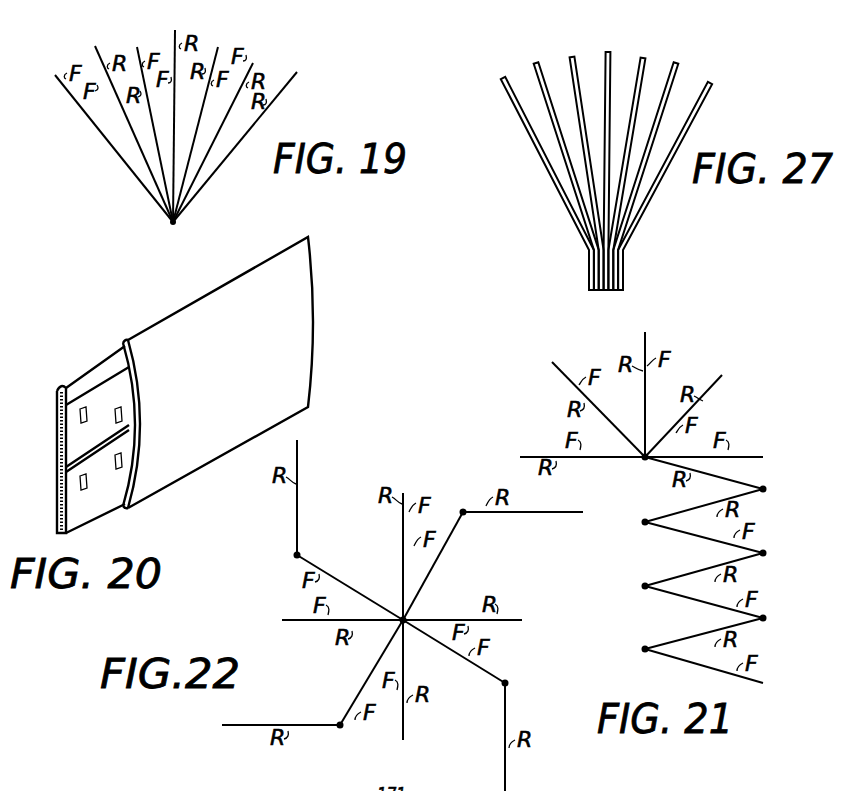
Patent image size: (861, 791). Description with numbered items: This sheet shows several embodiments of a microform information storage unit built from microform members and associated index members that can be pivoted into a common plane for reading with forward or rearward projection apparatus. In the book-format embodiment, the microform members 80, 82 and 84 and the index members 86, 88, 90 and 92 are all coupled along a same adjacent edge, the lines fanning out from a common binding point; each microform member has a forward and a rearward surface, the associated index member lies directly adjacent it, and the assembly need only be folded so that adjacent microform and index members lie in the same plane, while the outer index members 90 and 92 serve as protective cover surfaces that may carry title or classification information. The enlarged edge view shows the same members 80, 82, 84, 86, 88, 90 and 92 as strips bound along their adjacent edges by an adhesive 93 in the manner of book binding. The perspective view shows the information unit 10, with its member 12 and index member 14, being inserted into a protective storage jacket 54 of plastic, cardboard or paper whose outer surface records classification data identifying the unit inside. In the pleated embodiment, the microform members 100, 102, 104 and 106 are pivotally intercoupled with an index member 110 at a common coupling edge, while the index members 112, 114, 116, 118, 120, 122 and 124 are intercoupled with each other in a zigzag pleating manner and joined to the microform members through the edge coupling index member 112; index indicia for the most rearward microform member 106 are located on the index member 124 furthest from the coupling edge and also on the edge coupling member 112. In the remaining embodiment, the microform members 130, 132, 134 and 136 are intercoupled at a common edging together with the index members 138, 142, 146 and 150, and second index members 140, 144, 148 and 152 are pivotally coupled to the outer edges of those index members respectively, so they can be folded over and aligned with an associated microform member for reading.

In FIG. 20, the information unit 10 is at (104, 352).
In FIG. 20, the base plate 12 is at (88, 513).
In FIG. 20, the index member 14 is at (58, 497).
In FIG. 20, the storage jacket 54 is at (251, 258).
In FIG. 19, the microform member 80 is at (96, 64).
In FIG. 27, the microform member 80 is at (534, 70).
In FIG. 19, the microform member 82 is at (176, 47).
In FIG. 27, the microform member 82 is at (611, 53).
In FIG. 19, the microform member 84 is at (254, 75).
In FIG. 27, the microform member 84 is at (679, 78).
In FIG. 19, the index member 86 is at (138, 53).
In FIG. 27, the index member 86 is at (571, 62).
In FIG. 19, the index member 88 is at (218, 59).
In FIG. 27, the index member 88 is at (645, 65).
In FIG. 19, the index member 90 is at (293, 87).
In FIG. 27, the index member 90 is at (712, 91).
In FIG. 19, the index member 92 is at (52, 70).
In FIG. 27, the index member 92 is at (500, 80).
In FIG. 27, the adhesive 93 is at (589, 274).
In FIG. 21, the microform member 100 is at (717, 381).
In FIG. 21, the microform member 102 is at (647, 341).
In FIG. 21, the microform member 104 is at (558, 362).
In FIG. 21, the microform member 106 is at (544, 455).
In FIG. 21, the index member 110 is at (761, 455).
In FIG. 21, the index member 112 is at (761, 486).
In FIG. 21, the index member 114 is at (763, 494).
In FIG. 21, the index member 116 is at (761, 551).
In FIG. 21, the index member 118 is at (763, 556).
In FIG. 21, the index member 120 is at (761, 616).
In FIG. 21, the index member 122 is at (763, 622).
In FIG. 21, the index member 124 is at (763, 681).
In FIG. 22, the microform member 130 is at (408, 490).
In FIG. 22, the microform member 132 is at (509, 622).
In FIG. 22, the microform member 134 is at (405, 726).
In FIG. 22, the microform member 136 is at (302, 622).
In FIG. 22, the index member 138 is at (439, 573).
In FIG. 22, the index member 140 is at (559, 512).
In FIG. 22, the index member 142 is at (496, 673).
In FIG. 22, the index member 144 is at (505, 760).
In FIG. 22, the index member 146 is at (364, 676).
In FIG. 22, the index member 148 is at (275, 724).
In FIG. 22, the index member 150 is at (329, 570).
In FIG. 22, the index member 152 is at (300, 454).